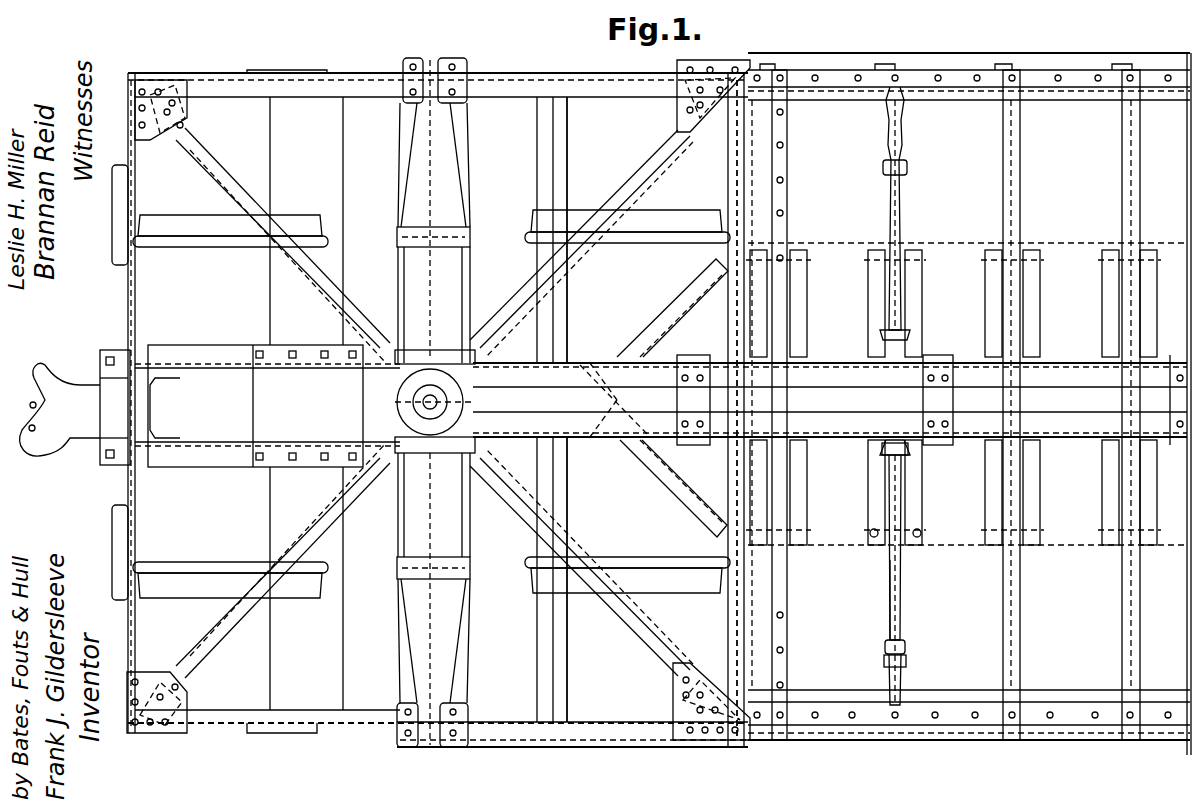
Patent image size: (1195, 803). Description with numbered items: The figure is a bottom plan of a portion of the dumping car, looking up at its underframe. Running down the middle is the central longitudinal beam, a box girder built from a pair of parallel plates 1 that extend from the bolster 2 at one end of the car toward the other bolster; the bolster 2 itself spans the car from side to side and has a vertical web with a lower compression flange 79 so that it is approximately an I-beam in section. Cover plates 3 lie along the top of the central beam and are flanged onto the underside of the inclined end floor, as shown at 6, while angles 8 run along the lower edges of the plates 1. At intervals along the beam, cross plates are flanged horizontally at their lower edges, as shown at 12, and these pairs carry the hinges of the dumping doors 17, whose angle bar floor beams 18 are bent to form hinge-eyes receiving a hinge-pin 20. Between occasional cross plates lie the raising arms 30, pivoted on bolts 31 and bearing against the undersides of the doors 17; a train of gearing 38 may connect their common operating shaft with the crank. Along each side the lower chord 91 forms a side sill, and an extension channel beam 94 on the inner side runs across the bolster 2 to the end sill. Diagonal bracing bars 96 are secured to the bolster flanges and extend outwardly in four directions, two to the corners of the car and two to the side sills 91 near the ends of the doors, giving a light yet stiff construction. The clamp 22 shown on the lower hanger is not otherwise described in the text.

The parallel plates 1 is at (693, 547).
The bolster 2 is at (435, 255).
The cover plates 3 is at (715, 410).
The flange 6 is at (695, 300).
The angles 8 is at (830, 400).
The horizontal flange 12 is at (800, 306).
The doors 17 is at (976, 405).
The angle bar floor beams 18 is at (792, 633).
The hinge-pin 20 is at (922, 532).
The hanger clamp 22 is at (886, 668).
The arms 30 is at (888, 586).
The bolts 31 is at (912, 450).
The train of gearing 38 is at (215, 353).
The compression flange 79 is at (433, 600).
The lower chord 91 is at (580, 725).
The channel beam 94 is at (316, 710).
The diagonal bracing bars 96 is at (563, 268).